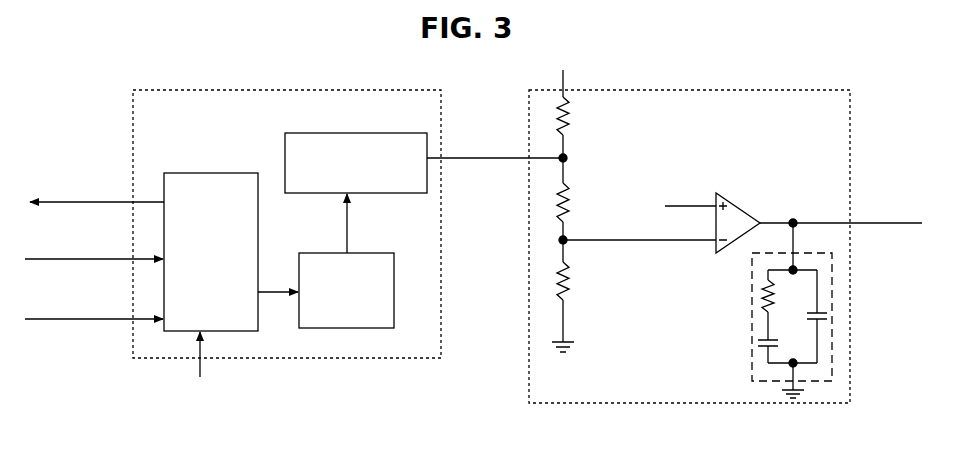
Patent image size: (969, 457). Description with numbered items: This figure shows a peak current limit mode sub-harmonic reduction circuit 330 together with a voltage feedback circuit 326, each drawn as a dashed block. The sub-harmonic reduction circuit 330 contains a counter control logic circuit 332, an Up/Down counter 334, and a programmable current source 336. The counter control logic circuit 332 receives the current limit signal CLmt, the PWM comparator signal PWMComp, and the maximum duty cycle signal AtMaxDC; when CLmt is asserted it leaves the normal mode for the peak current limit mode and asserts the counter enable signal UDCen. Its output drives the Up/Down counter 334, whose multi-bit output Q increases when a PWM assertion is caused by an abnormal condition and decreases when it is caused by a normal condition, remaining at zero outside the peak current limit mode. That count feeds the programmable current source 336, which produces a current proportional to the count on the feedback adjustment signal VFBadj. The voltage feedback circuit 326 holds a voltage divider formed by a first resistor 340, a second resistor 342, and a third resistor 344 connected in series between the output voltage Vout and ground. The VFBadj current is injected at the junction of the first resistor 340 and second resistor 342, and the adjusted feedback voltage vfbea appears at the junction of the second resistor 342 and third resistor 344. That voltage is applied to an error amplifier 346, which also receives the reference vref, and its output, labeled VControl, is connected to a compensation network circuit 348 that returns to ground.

The voltage feedback circuit 326 is at (761, 90).
The sub-harmonic reduction circuit 330 is at (291, 90).
The counter control logic circuit 332 is at (193, 173).
The Up/Down counter 334 is at (327, 253).
The programmable current source 336 is at (297, 133).
The first resistor 340 is at (572, 104).
The second resistor 342 is at (572, 193).
The third resistor 344 is at (572, 271).
The error amplifier 346 is at (745, 212).
The compensation network circuit 348 is at (752, 306).